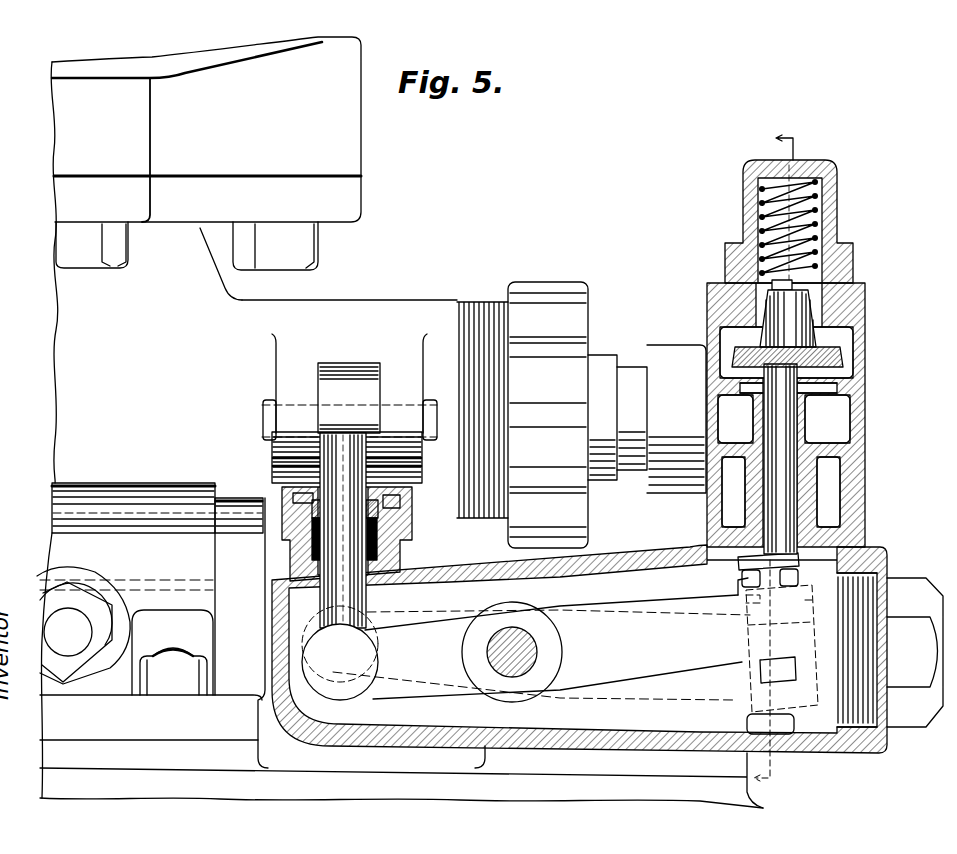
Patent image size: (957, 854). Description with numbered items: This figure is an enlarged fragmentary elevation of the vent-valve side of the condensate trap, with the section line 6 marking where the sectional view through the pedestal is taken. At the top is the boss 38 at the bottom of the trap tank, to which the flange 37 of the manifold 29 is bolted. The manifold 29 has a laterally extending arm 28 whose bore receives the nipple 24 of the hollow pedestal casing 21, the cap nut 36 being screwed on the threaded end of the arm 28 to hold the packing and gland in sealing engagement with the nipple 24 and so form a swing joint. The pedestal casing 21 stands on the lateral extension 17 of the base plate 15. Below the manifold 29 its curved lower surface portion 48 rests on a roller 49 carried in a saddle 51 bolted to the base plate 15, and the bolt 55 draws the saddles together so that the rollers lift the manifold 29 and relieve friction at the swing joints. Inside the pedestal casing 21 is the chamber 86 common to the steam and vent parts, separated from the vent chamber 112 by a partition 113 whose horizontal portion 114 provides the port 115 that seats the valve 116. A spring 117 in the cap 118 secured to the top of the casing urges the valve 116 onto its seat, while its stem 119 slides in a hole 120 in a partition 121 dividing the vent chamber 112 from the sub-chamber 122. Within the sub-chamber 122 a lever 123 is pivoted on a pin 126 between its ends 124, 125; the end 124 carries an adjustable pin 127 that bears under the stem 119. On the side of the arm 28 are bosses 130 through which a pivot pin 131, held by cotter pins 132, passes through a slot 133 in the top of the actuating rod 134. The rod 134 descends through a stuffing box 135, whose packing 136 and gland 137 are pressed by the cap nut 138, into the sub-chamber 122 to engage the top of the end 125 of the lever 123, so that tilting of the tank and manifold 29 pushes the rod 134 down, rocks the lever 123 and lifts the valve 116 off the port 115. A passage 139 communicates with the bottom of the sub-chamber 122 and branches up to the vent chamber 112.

The section line 6- 6 is at (776, 456).
The base plate 15 is at (596, 780).
The lateral extension 17 is at (760, 797).
The hollow pedestal casing 21 is at (868, 441).
The nipple 24 is at (598, 475).
The arm 28 is at (370, 300).
The manifold 29 is at (78, 295).
The cap nut 36 is at (578, 320).
The flange 37 is at (355, 208).
The boss 38 is at (355, 153).
The lower surface portion 48 is at (166, 505).
The roller 49 is at (123, 484).
The saddle 51 is at (250, 727).
The bolt 55 is at (82, 630).
The chamber 86 is at (855, 366).
The vent chamber 112 is at (852, 409).
The partition 113 is at (846, 391).
The horizontal portion 114 is at (738, 400).
The port 115 is at (818, 397).
The valve 116 is at (833, 353).
The spring 117 is at (800, 229).
The cap 118 is at (830, 193).
The stem 119 is at (765, 520).
The hole 120 is at (762, 514).
The partition 121 is at (812, 522).
The sub-chamber 122 is at (553, 636).
The lever 123 is at (624, 610).
The end of lever 124 is at (752, 665).
The end of lever 125 is at (375, 672).
The pin 126 is at (540, 655).
The adjustable pin 127 is at (746, 566).
The bosses 130 is at (272, 462).
The pivot pin 131 is at (290, 402).
The cotter pins 132 is at (270, 400).
The slot 133 is at (340, 400).
The actuating rod 134 is at (352, 598).
The stuffing box 135 is at (390, 557).
The packing 136 is at (380, 545).
The gland 137 is at (397, 510).
The cap nut 138 is at (282, 496).
The passage 139 is at (748, 722).